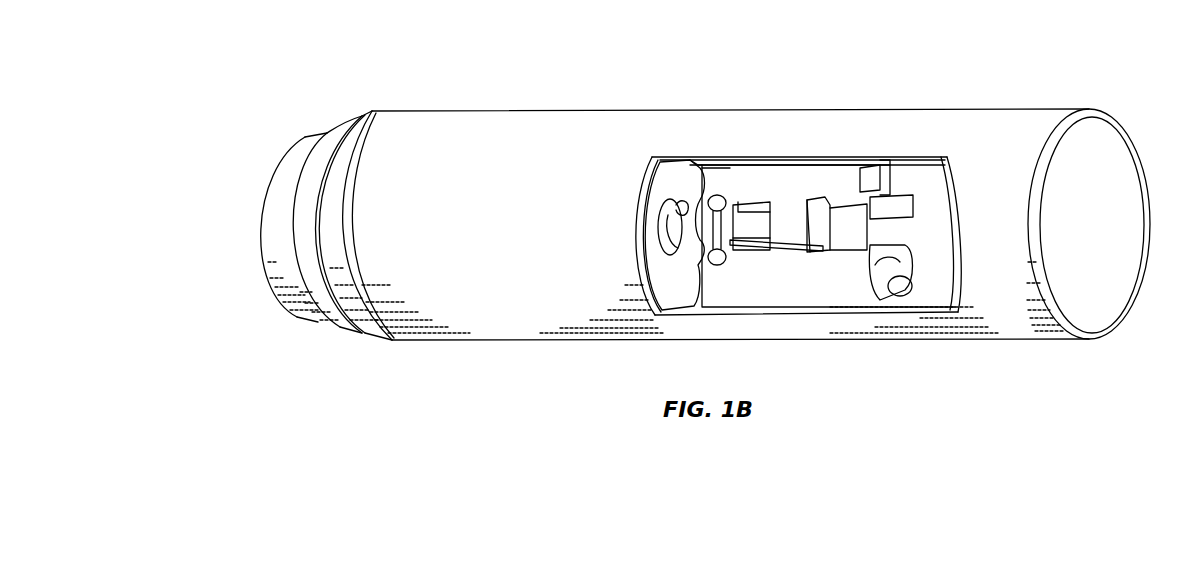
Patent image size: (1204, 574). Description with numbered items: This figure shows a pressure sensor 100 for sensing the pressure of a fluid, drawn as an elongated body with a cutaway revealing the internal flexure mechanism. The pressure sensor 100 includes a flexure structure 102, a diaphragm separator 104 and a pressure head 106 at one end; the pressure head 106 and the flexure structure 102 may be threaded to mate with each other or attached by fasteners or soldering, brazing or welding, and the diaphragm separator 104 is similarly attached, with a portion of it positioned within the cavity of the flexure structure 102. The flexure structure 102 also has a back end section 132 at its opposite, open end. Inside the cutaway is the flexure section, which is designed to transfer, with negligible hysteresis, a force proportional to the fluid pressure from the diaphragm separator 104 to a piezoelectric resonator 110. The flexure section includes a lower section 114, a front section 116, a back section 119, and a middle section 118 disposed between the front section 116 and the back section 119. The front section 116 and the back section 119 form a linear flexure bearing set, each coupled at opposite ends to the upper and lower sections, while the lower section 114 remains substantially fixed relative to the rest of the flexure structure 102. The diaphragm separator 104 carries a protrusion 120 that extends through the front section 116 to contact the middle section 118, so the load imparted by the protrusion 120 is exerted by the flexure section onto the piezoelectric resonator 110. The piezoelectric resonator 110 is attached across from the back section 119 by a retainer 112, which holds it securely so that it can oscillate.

The pressure sensor 100 is at (268, 62).
The flexure structure 102 is at (551, 126).
The diaphragm separator 104 is at (675, 172).
The pressure head 106 is at (318, 134).
The piezoelectric resonator 110 is at (898, 234).
The retainer 112 is at (891, 192).
The lower section 114 is at (752, 282).
The front section 116 is at (703, 228).
The middle section 118 is at (790, 251).
The back section 119 is at (832, 234).
The protrusion 120 is at (748, 218).
The back end section 132 is at (1122, 195).